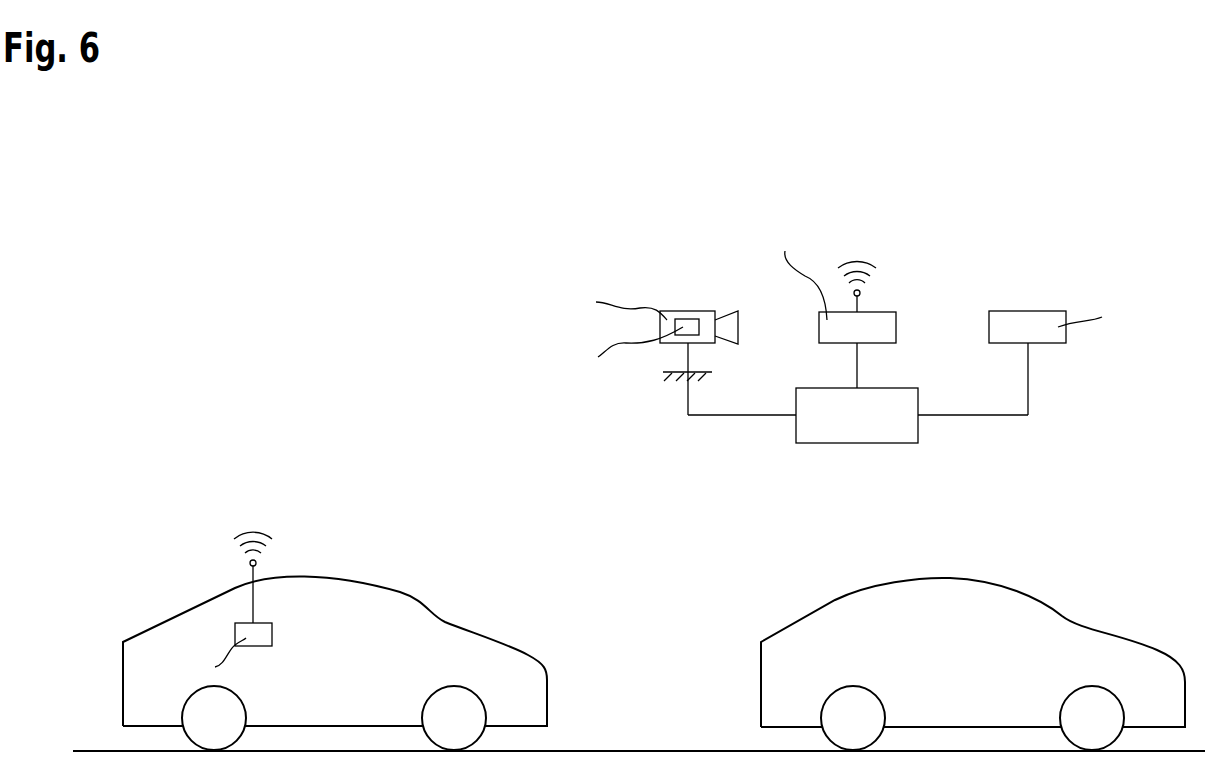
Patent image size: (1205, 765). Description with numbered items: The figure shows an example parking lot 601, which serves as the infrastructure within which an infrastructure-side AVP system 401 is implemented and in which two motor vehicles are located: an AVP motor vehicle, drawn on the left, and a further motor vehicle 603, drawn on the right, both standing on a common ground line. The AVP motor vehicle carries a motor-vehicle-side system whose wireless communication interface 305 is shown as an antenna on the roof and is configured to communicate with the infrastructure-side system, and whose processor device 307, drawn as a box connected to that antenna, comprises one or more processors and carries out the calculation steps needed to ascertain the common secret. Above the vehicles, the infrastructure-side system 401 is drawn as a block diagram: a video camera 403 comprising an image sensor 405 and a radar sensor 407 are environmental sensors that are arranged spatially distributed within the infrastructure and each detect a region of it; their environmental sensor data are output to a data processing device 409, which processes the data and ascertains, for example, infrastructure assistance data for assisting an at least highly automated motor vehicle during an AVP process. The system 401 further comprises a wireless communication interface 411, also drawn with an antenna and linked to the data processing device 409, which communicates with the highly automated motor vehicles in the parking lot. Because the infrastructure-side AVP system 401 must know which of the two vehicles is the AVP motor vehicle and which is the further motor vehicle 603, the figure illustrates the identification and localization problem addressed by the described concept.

The wireless communication interface 305 is at (252, 577).
The processor device 307 is at (272, 634).
The infrastructure-side system 401 is at (1022, 232).
The video camera 403 is at (663, 316).
The image sensor 405 is at (690, 320).
The radar sensor 407 is at (1048, 311).
The data processing device 409 is at (918, 428).
The wireless communication interface 411 is at (896, 327).
The parking lot 601 is at (1080, 184).
The further motor vehicle 603 is at (1080, 541).